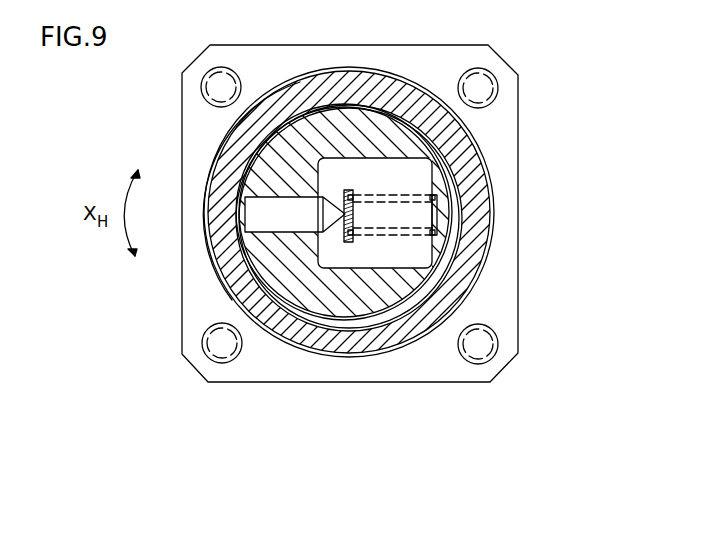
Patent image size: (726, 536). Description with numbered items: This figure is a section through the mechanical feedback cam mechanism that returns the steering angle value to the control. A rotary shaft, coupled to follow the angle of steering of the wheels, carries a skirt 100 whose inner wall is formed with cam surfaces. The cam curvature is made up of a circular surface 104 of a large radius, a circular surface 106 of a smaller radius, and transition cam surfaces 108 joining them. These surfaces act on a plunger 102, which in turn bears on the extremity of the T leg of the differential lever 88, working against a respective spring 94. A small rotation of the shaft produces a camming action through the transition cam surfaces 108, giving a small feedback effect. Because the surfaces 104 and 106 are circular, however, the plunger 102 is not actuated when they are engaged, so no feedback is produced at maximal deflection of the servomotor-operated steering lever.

The differential lever 88 is at (402, 292).
The spring 94 is at (437, 229).
The skirt 100 is at (395, 107).
The plunger 102 is at (255, 218).
The circular surface of a large radius 104 is at (457, 270).
The circular surface of a smaller radius 106 is at (432, 140).
The transition cam surfaces 108 is at (458, 198).